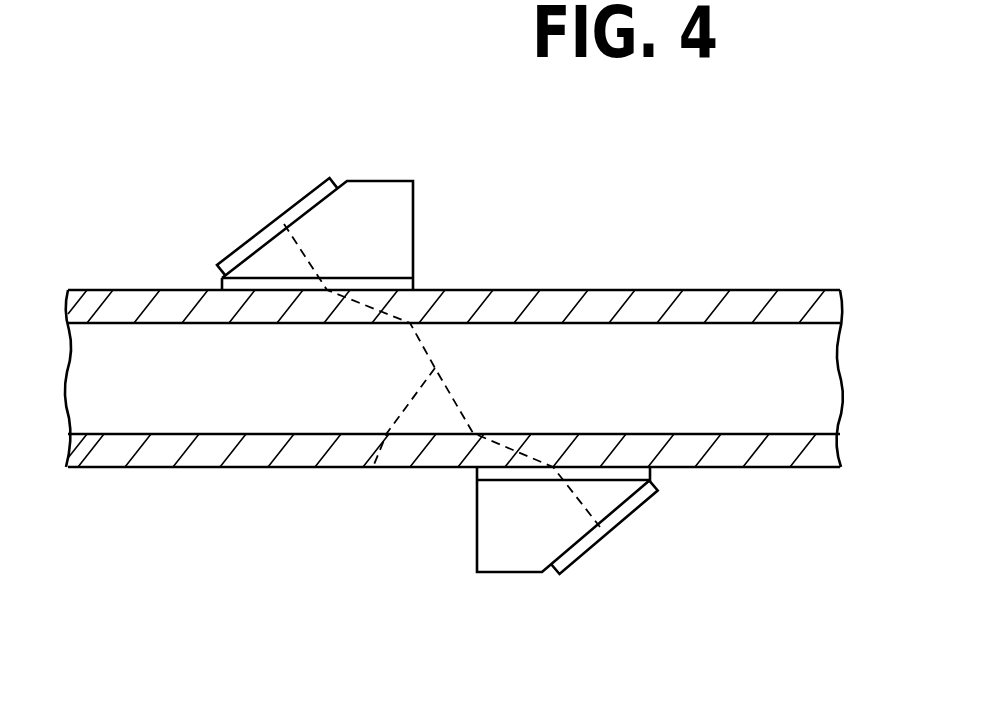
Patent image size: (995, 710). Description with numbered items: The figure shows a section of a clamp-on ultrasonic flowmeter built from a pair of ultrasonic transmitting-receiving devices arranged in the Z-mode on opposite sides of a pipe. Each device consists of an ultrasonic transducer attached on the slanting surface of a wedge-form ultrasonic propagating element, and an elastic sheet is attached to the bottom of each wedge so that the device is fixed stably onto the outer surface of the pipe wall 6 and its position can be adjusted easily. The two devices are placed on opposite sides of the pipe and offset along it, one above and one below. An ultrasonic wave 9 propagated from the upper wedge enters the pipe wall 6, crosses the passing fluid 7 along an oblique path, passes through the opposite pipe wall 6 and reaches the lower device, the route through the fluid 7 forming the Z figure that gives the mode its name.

The pipe wall 6 is at (652, 297).
The passing fluid 7 is at (742, 345).
The ultrasonic wave 9 is at (373, 467).